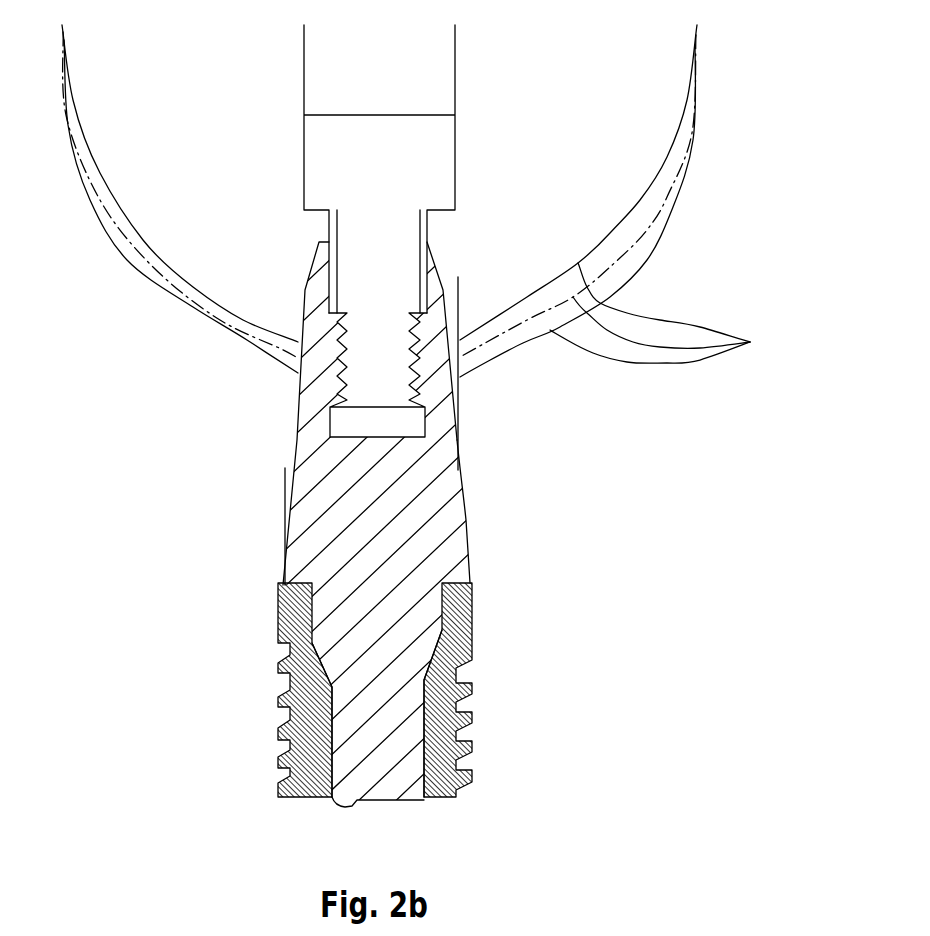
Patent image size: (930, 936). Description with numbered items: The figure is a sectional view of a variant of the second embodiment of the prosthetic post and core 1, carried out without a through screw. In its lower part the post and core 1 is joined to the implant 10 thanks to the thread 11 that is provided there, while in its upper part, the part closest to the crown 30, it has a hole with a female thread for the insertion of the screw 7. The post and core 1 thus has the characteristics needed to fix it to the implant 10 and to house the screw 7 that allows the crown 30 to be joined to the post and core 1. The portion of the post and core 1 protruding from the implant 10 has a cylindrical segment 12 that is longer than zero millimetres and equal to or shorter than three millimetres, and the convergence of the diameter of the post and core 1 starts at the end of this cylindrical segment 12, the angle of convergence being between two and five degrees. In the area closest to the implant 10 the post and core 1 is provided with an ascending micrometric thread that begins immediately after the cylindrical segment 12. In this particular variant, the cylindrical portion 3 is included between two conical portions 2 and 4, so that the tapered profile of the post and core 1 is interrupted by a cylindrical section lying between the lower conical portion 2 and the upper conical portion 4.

The post and core 1 is at (329, 480).
The conical portion 2 is at (465, 505).
The cylindrical portion 3 is at (297, 433).
The conical portion 4 is at (298, 370).
The screw 7 is at (342, 168).
The implant 10 is at (473, 688).
The thread 11 is at (407, 782).
The cylindrical segment 12 is at (470, 570).
The crown 30 is at (674, 313).